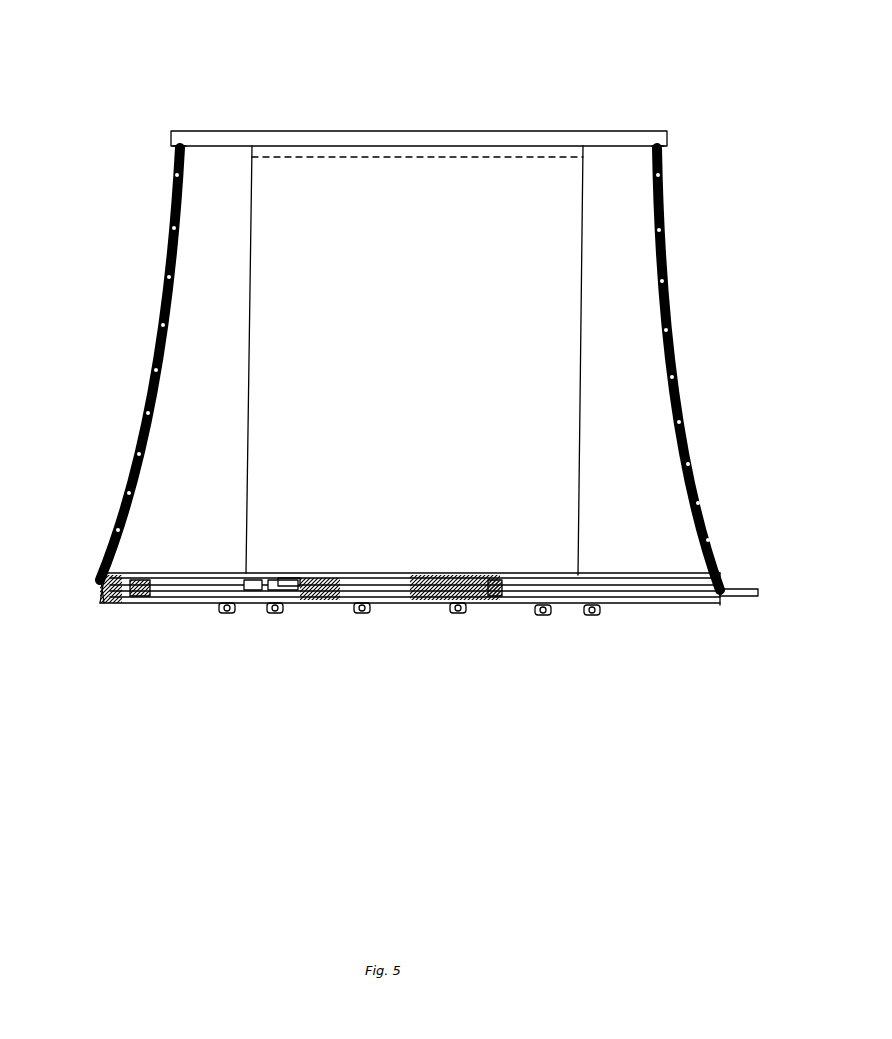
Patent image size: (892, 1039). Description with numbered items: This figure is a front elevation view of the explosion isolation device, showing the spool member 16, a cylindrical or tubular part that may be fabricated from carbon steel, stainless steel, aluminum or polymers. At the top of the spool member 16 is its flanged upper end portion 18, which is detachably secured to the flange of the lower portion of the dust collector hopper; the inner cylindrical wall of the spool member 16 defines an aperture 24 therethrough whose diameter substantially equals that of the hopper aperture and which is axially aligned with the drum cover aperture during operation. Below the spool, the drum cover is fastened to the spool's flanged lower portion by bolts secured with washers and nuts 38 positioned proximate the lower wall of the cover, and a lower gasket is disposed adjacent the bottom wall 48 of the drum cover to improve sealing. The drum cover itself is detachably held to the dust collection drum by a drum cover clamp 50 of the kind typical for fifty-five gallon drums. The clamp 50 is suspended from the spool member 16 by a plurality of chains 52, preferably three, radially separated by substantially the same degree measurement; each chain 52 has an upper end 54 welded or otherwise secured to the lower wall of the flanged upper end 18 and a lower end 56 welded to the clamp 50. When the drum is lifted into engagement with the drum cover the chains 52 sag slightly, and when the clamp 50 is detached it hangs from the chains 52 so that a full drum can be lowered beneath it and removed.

The spool member 16 is at (522, 385).
The flanged upper end portion 18 is at (236, 143).
The aperture 24 is at (427, 157).
The nuts 38 is at (275, 615).
The bottom wall of the drum cover 48 is at (163, 597).
The drum cover clamp 50 is at (750, 587).
The chains 52 is at (155, 338).
The upper end of the chain 54 is at (173, 147).
The lower end of the chain 56 is at (102, 582).